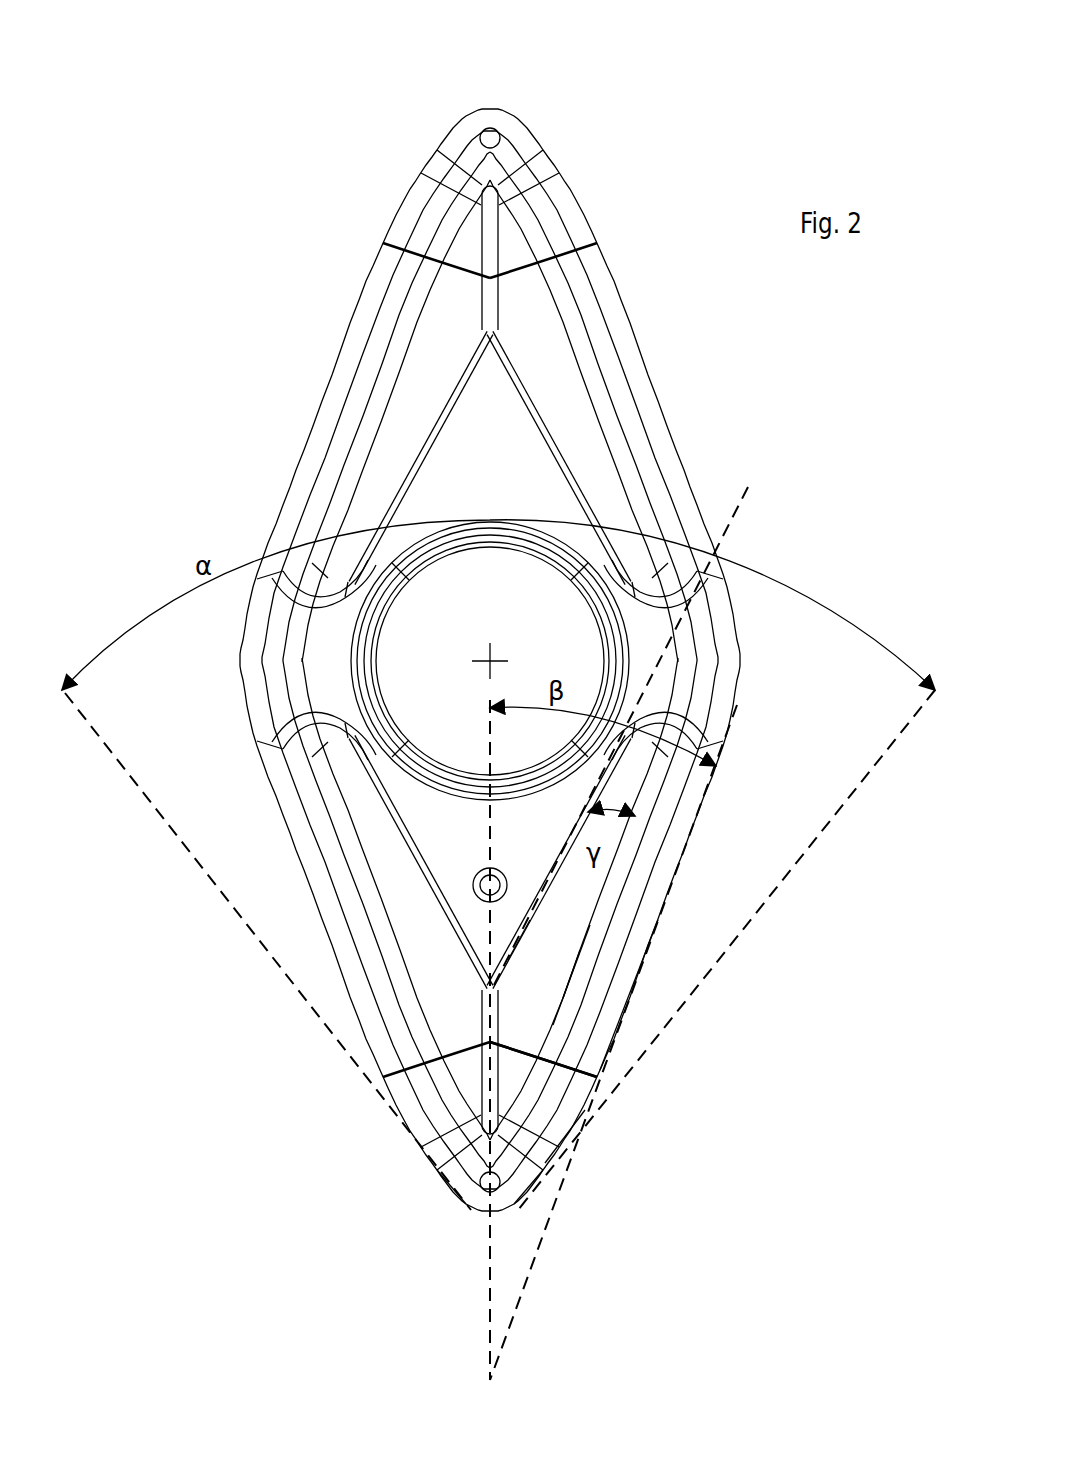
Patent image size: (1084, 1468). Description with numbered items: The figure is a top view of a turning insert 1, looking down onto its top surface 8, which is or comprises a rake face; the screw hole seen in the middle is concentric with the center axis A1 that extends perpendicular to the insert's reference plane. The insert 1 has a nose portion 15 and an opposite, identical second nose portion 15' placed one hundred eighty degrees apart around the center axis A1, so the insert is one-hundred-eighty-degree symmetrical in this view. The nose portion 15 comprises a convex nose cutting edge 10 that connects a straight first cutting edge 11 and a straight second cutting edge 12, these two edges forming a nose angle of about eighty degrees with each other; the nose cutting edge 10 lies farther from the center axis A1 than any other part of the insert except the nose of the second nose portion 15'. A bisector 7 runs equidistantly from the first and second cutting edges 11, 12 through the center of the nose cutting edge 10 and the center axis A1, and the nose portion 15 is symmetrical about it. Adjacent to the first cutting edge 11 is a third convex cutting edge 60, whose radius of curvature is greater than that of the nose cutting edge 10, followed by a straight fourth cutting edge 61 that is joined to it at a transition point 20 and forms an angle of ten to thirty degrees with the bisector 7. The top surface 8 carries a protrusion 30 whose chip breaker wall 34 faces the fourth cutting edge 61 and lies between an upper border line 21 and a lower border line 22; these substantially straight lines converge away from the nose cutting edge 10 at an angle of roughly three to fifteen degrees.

The turning insert 1 is at (515, 641).
The bisector 7 is at (488, 867).
The top surface 8 is at (440, 485).
The nose cutting edge 10 is at (475, 1205).
The first cutting edge 11 is at (545, 1178).
The second cutting edge 12 is at (450, 1180).
The nose portion 15 is at (386, 1092).
The second nose portion 15' is at (558, 167).
The transition point 20 is at (598, 1087).
The upper border line 21 is at (540, 890).
The lower border line 22 is at (577, 975).
The protrusion 30 is at (425, 805).
The chip breaker wall 34 is at (550, 940).
The third convex cutting edge 60 is at (577, 1138).
The fourth cutting edge 61 is at (625, 1020).
The center axis A1 is at (508, 650).